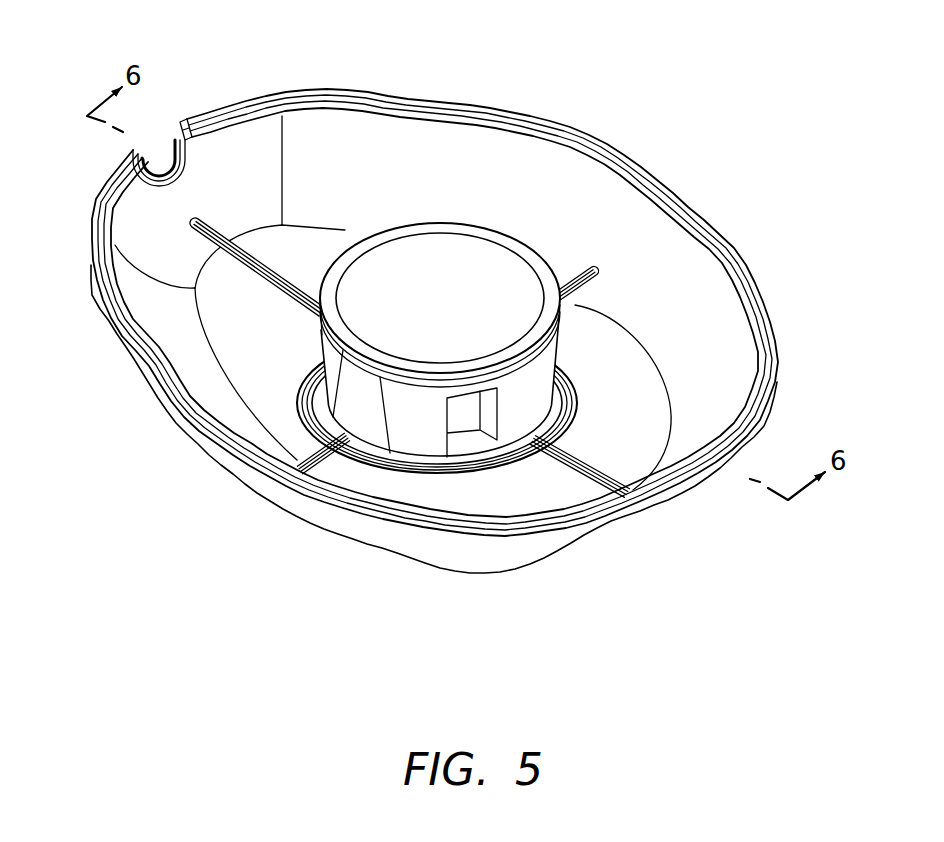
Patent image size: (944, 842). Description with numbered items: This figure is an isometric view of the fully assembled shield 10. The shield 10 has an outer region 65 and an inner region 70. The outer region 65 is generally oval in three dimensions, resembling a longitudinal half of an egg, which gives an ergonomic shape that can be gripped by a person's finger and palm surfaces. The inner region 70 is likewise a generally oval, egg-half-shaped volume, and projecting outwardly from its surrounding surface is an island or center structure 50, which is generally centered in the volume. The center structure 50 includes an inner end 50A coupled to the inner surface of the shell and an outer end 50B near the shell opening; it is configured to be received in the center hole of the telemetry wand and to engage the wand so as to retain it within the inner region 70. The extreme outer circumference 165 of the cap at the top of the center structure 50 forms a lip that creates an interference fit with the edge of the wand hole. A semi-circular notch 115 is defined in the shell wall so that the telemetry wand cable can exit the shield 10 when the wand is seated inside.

The shield 10 is at (766, 152).
The outer region 65 is at (447, 580).
The semi-circular notch 115 is at (160, 146).
The inner region 70 is at (438, 157).
The center structure 50 is at (527, 240).
The inner end 50A is at (535, 438).
The outer end 50B is at (473, 247).
The extreme outer circumference 165 is at (575, 320).